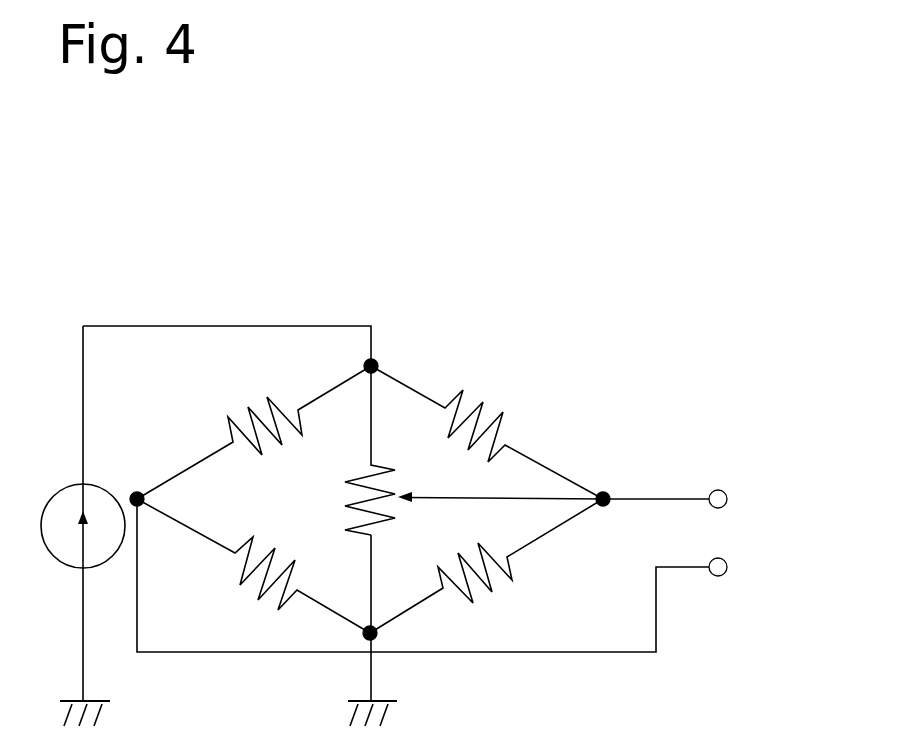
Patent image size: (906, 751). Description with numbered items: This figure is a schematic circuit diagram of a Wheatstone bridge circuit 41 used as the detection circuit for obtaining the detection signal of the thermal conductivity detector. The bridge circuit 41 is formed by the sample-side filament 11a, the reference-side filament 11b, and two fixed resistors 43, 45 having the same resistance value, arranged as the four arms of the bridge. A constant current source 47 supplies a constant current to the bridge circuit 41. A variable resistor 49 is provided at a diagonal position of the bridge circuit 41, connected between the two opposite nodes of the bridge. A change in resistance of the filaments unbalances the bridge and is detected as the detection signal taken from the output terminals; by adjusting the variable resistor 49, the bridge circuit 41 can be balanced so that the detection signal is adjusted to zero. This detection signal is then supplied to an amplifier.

The Wheatstone bridge circuit 41 is at (463, 282).
The fixed resistor 43 is at (240, 413).
The fixed resistor 45 is at (245, 590).
The sample-side filament 11a is at (497, 403).
The reference-side filament 11b is at (502, 588).
The constant current source 47 is at (53, 498).
The variable resistor 49 is at (344, 497).